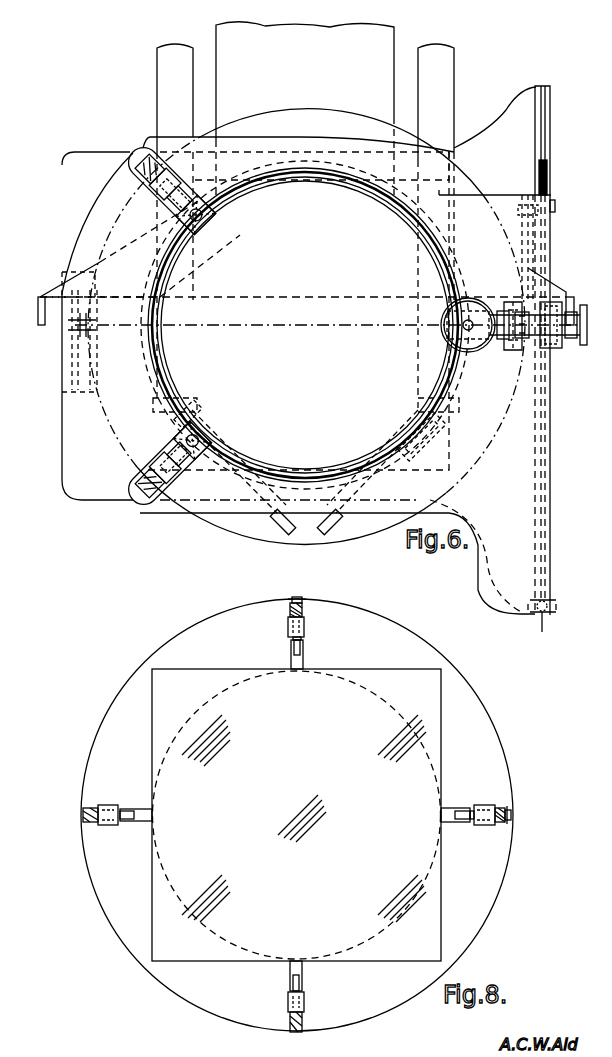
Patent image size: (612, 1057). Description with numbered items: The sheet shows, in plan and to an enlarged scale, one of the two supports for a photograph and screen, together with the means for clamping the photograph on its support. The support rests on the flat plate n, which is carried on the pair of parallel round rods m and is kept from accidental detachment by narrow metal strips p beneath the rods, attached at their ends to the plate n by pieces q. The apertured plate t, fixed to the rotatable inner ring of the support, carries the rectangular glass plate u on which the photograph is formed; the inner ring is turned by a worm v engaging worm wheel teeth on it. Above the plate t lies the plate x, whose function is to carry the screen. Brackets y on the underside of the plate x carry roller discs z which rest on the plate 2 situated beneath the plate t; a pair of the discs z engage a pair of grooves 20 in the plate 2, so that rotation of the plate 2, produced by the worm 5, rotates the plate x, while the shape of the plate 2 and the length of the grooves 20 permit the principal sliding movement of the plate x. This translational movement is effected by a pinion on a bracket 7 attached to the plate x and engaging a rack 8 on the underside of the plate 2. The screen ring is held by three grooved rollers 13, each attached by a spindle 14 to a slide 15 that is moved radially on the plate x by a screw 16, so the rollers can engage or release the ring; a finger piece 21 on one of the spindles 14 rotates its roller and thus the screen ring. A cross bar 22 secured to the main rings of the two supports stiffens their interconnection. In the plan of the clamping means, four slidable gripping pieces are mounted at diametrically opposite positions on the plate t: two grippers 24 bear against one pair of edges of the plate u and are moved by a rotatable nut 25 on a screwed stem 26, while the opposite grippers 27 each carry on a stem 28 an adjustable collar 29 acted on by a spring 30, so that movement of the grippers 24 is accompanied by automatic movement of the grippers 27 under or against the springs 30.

In FIG. 6, the plate 2 is at (75, 170).
In FIG. 6, the worm 5 is at (422, 440).
In FIG. 6, the bracket 7 is at (573, 334).
In FIG. 6, the rack 8 is at (524, 220).
In FIG. 6, the grooved roller 13 is at (186, 152).
In FIG. 6, the spindle 14 is at (222, 206).
In FIG. 6, the slide 15 is at (200, 220).
In FIG. 6, the screw 16 is at (140, 152).
In FIG. 6, the groove 20 is at (538, 137).
In FIG. 6, the finger piece 21 is at (468, 300).
In FIG. 6, the cross bar 22 is at (466, 156).
In FIG. 8, the slidable gripping piece 24 is at (154, 816).
In FIG. 8, the rotatable nut 25 is at (113, 825).
In FIG. 8, the screwed stem 26 is at (128, 810).
In FIG. 8, the gripper 27 is at (304, 664).
In FIG. 8, the stem 28 is at (300, 606).
In FIG. 8, the adjustable collar 29 is at (305, 629).
In FIG. 8, the spring 30 is at (290, 612).
In FIG. 6, the rod m is at (160, 78).
In FIG. 6, the flat plate n is at (290, 30).
In FIG. 6, the plate t is at (318, 114).
In FIG. 8, the plate t is at (430, 656).
In FIG. 6, the plate x is at (294, 143).
In FIG. 6, the piece q is at (42, 296).
In FIG. 6, the roller disc z is at (76, 342).
In FIG. 6, the metal strip p is at (125, 326).
In FIG. 6, the bracket y is at (88, 374).
In FIG. 6, the worm v is at (204, 428).
In FIG. 6, the glass plate u is at (446, 452).
In FIG. 8, the glass plate u is at (156, 705).